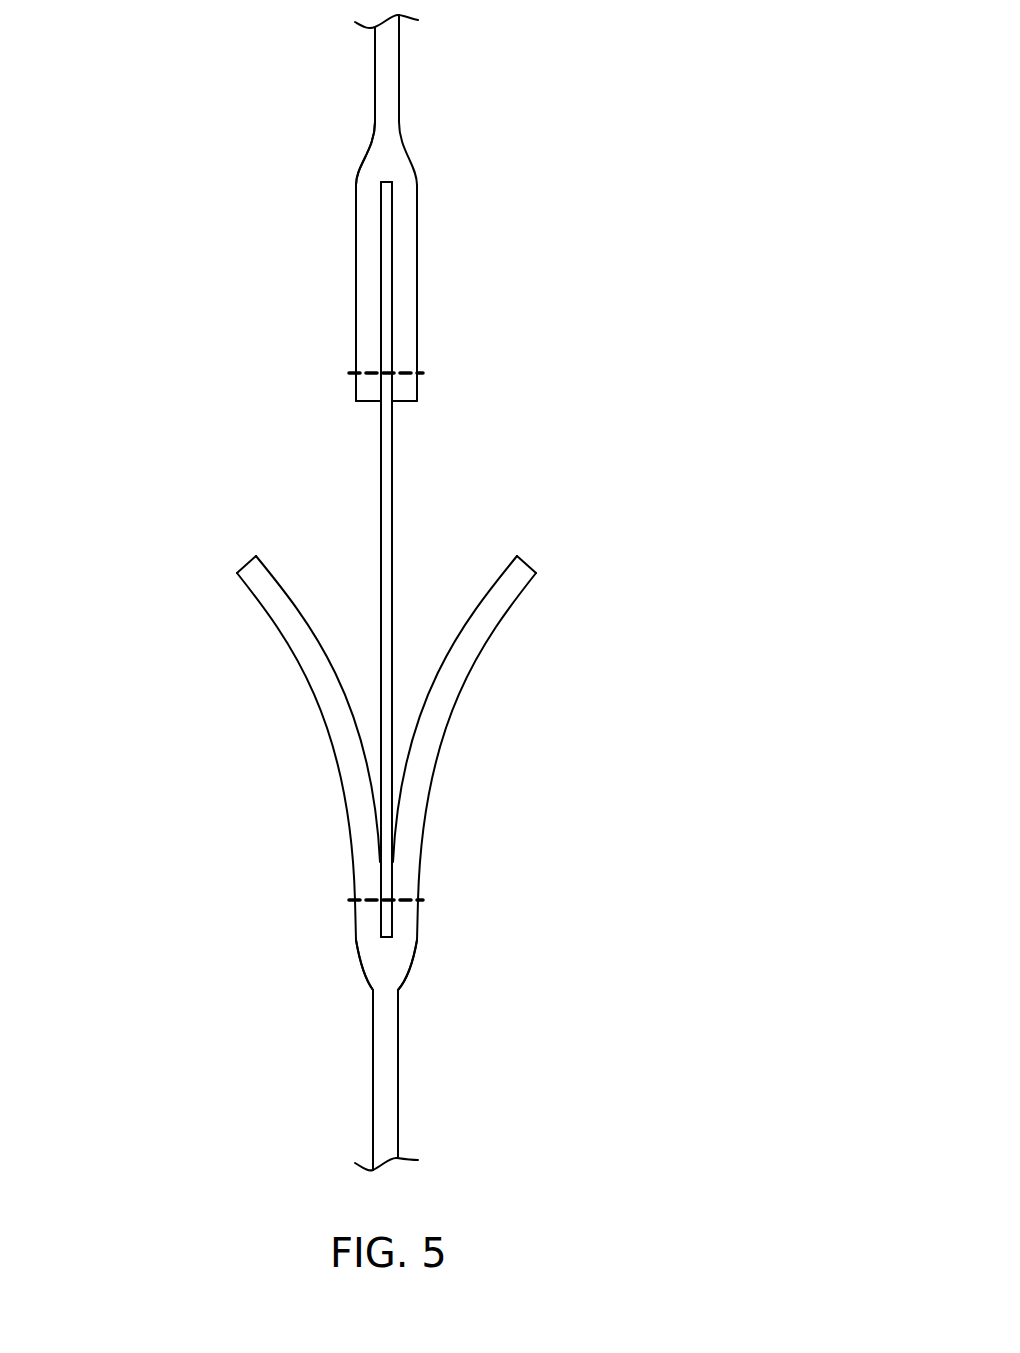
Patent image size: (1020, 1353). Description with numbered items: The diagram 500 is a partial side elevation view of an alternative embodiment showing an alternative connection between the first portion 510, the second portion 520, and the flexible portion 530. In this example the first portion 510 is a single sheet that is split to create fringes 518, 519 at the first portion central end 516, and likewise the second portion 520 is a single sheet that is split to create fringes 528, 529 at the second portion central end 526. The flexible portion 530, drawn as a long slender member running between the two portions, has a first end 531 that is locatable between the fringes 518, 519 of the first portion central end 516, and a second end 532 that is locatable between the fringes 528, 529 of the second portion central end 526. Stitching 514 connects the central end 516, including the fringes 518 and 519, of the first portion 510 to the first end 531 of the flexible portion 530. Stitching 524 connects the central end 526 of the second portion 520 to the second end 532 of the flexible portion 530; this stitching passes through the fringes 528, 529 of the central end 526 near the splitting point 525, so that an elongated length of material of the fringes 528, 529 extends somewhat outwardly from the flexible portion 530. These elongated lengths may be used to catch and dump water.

The diagram 500 is at (738, 263).
The first portion 510 is at (232, 178).
The first portion central end 516 is at (372, 150).
The first end 531 is at (387, 213).
The flexible portion 530 is at (393, 510).
The stitching 514 is at (398, 373).
The fringe 518 is at (366, 390).
The fringe 519 is at (408, 390).
The fringe 528 is at (259, 591).
The fringe 529 is at (517, 591).
The second portion 520 is at (233, 847).
The second end 532 is at (387, 880).
The stitching 524 is at (372, 905).
The splitting point 525 is at (387, 943).
The second portion central end 526 is at (387, 990).